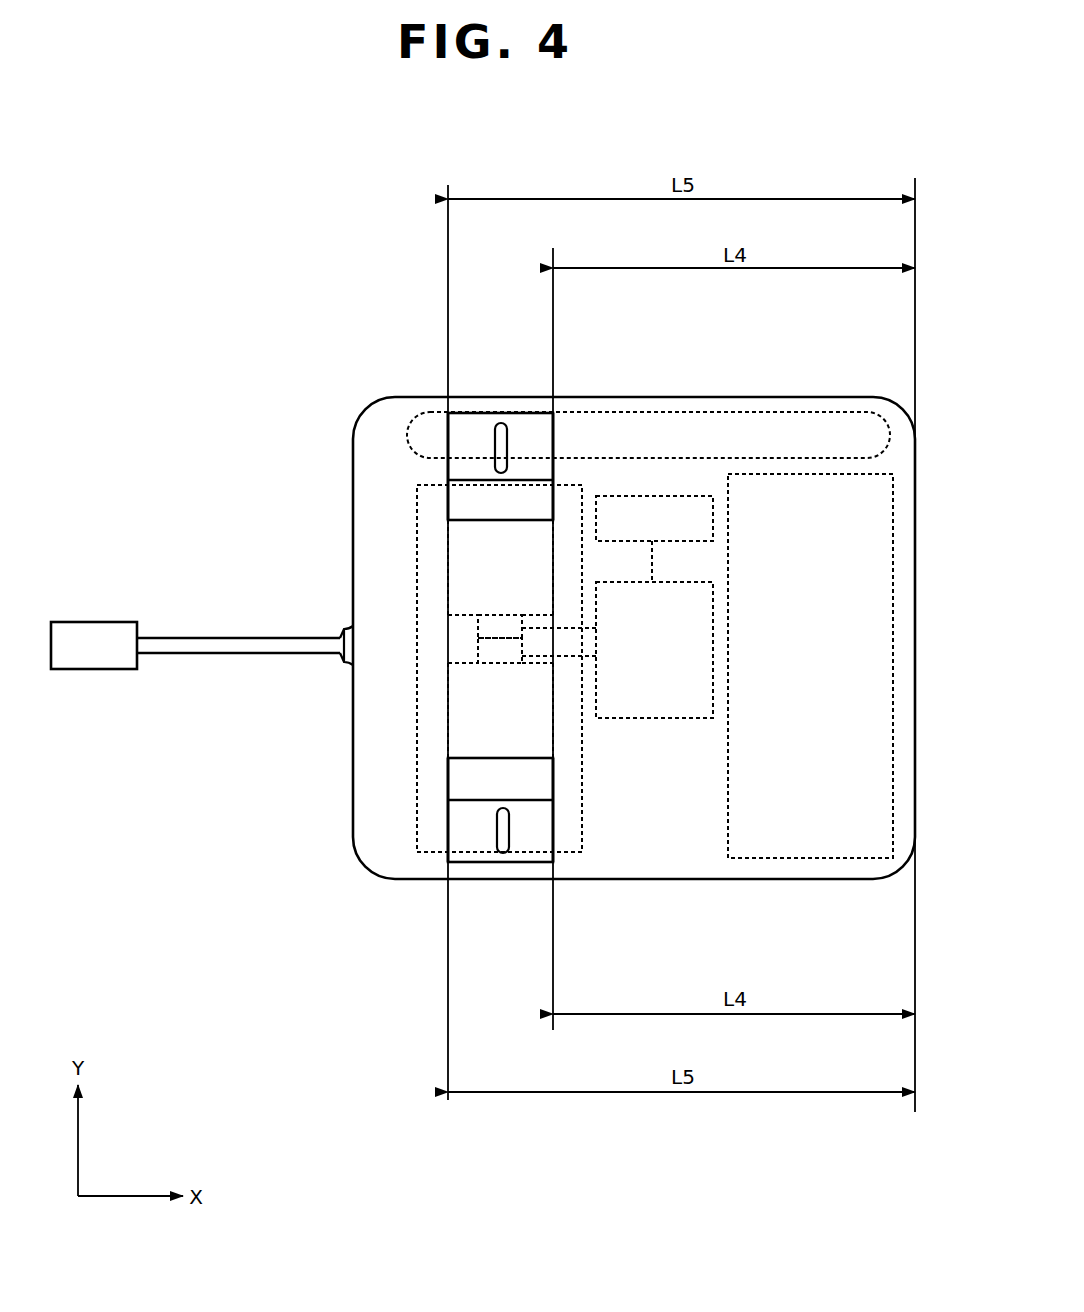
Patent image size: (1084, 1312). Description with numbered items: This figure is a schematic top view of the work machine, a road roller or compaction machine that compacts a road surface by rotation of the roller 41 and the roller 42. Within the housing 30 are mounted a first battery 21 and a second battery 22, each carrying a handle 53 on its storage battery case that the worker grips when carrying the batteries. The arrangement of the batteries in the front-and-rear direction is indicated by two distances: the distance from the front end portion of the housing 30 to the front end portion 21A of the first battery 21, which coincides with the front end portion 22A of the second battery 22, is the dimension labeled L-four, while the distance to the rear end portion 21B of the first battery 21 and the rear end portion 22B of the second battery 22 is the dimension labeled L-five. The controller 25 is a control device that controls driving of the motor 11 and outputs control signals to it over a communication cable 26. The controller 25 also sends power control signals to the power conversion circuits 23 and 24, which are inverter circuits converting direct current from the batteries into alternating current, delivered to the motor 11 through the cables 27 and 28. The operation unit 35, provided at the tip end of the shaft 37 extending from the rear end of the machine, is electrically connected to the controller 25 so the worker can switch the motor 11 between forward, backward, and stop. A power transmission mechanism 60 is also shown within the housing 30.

The motor 11 is at (665, 718).
The first battery 21 is at (533, 826).
The front end portion of the first battery 21A is at (553, 815).
The rear end portion of the first battery 21B is at (447, 830).
The second battery 22 is at (528, 430).
The front end portion of the second battery 22A is at (554, 430).
The rear end portion of the second battery 22B is at (447, 447).
The power conversion circuit 23 is at (478, 648).
The power conversion circuit 24 is at (478, 625).
The controller 25 is at (648, 496).
The communication cable 26 is at (656, 560).
The cable 27 is at (565, 656).
The cable 28 is at (565, 628).
The housing 30 is at (915, 580).
The operation unit 35 is at (116, 622).
The shaft 37 is at (214, 655).
The roller 41 is at (812, 858).
The roller 42 is at (435, 855).
The handle 53 is at (494, 425).
The power transmission mechanism 60 is at (718, 412).